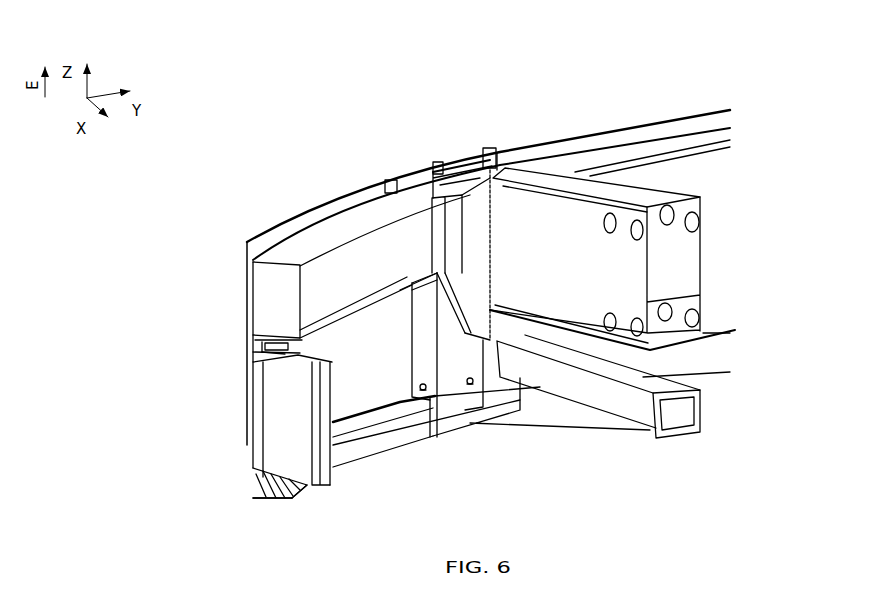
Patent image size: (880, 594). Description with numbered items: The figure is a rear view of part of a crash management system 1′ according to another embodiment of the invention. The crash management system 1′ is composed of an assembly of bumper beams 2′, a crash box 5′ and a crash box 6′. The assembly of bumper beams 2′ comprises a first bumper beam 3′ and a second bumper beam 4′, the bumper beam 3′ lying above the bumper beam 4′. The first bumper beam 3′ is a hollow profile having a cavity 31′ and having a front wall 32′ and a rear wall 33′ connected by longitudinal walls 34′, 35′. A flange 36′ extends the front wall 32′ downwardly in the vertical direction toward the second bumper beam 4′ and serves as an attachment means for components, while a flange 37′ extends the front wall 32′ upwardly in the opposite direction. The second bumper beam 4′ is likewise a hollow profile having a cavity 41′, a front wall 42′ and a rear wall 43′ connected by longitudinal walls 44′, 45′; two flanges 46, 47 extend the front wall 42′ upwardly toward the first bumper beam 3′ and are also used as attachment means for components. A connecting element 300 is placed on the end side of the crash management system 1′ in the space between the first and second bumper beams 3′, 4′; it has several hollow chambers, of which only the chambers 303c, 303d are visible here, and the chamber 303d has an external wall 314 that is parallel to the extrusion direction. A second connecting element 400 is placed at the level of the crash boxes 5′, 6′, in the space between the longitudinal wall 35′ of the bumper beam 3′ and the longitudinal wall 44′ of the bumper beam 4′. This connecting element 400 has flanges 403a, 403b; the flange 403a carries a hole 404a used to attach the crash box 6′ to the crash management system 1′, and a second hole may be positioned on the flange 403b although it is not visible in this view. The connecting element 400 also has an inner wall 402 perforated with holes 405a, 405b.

The crash management system 1′ is at (668, 41).
The assembly of bumper beams 2′ is at (206, 159).
The first bumper beam 3′ is at (709, 167).
The second bumper beam 4′ is at (724, 358).
The crash box 5′ is at (709, 204).
The crash box 6′ is at (702, 415).
The cavity 31′ is at (269, 300).
The front wall 32′ is at (246, 290).
The rear wall 33′ is at (411, 231).
The longitudinal wall 34′ is at (363, 212).
The longitudinal wall 35′ is at (266, 332).
The flange 36′ is at (242, 357).
The flange 37′ is at (327, 196).
The cavity 41′ is at (278, 495).
The front wall 42′ is at (250, 485).
The rear wall 43′ is at (335, 466).
The longitudinal wall 44′ is at (348, 412).
The longitudinal wall 45′ is at (304, 496).
The flange 46 is at (250, 456).
The flange 47 is at (404, 389).
The connecting element 300 is at (254, 497).
The hollow chamber 303c is at (252, 365).
The hollow chamber 303d is at (273, 353).
The external wall 314 is at (338, 472).
The second connecting element 400 is at (447, 376).
The inner wall 402 is at (418, 335).
The flange 403a is at (481, 397).
The flange 403b is at (522, 347).
The hole 404a is at (486, 412).
The hole 405a is at (417, 300).
The hole 405b is at (352, 446).